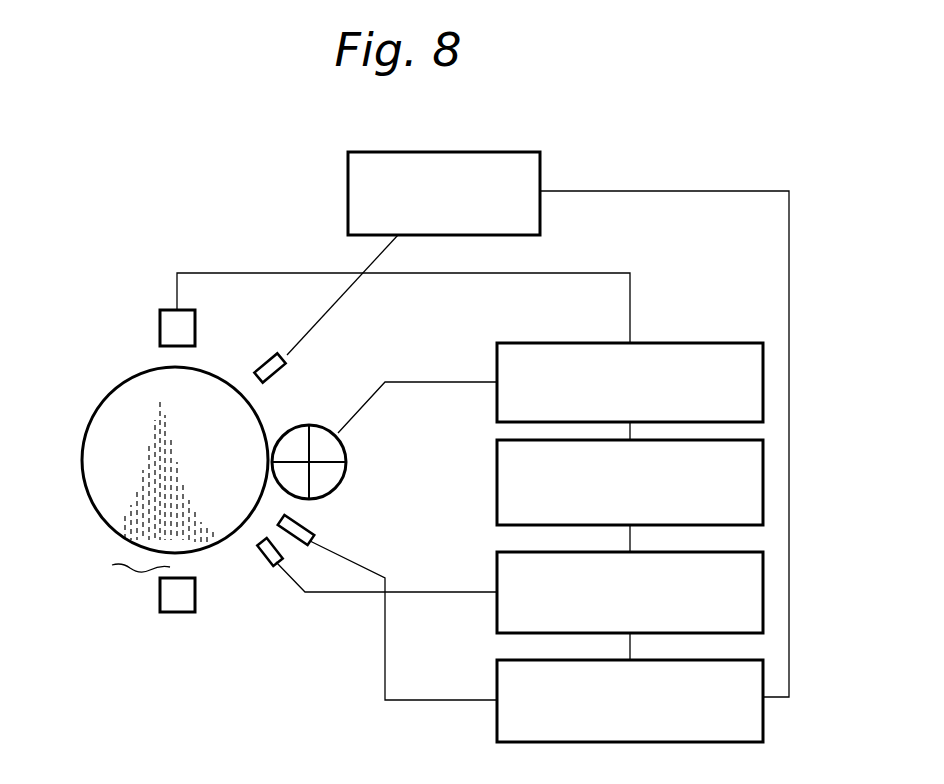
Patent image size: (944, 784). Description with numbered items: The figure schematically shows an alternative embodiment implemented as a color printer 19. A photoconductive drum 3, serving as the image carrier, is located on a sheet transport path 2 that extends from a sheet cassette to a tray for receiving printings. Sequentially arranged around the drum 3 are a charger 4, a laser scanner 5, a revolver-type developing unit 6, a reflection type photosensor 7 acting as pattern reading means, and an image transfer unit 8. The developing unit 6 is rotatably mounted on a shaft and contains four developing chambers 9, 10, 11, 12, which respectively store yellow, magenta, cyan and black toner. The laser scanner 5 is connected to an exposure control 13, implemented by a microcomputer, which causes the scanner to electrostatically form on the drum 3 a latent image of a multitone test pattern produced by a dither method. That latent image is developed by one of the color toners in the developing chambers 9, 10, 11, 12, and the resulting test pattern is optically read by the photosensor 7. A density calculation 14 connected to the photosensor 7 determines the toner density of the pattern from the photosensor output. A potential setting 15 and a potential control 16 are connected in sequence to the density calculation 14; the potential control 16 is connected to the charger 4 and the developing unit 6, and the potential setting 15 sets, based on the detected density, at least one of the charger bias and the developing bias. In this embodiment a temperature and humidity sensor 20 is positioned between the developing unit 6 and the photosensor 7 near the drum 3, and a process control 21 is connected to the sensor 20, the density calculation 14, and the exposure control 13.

The sheet transport path 2 is at (129, 572).
The photoconductive drum 3 is at (92, 456).
The charger 4 is at (160, 320).
The laser scanner 5 is at (272, 356).
The developing unit 6 is at (384, 449).
The reflection type photosensor 7 is at (262, 562).
The image transfer unit 8 is at (160, 595).
The developing chamber 9 is at (290, 428).
The developing chamber 10 is at (319, 426).
The developing chamber 11 is at (342, 480).
The developing chamber 12 is at (300, 498).
The exposure control 13 is at (348, 190).
The density calculation 14 is at (763, 592).
The potential setting 15 is at (763, 485).
The potential control 16 is at (763, 383).
The color printer 19 is at (799, 208).
The temperature and humidity sensor 20 is at (300, 548).
The process control 21 is at (763, 726).